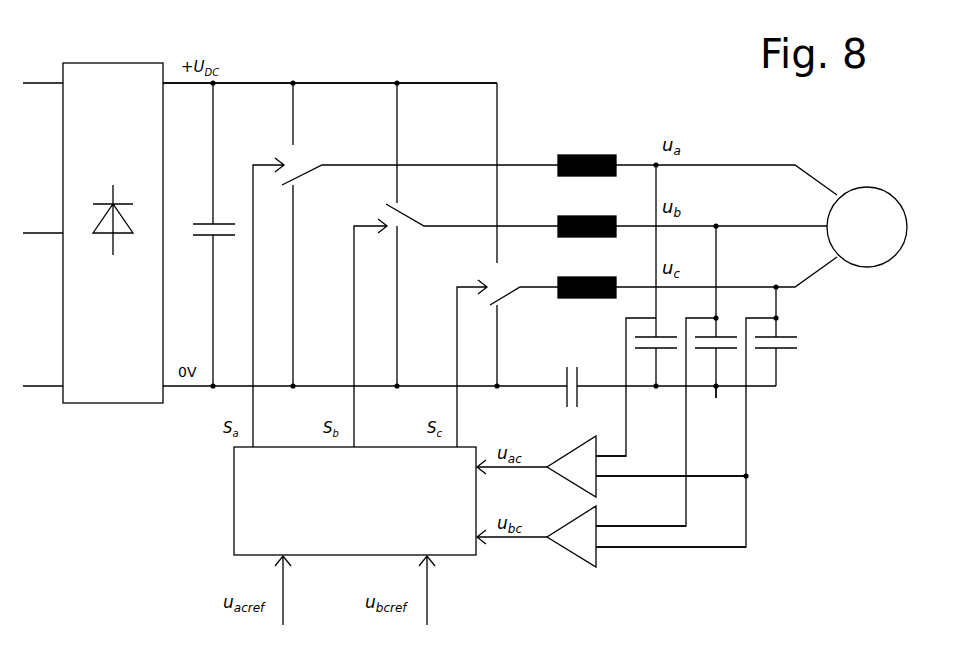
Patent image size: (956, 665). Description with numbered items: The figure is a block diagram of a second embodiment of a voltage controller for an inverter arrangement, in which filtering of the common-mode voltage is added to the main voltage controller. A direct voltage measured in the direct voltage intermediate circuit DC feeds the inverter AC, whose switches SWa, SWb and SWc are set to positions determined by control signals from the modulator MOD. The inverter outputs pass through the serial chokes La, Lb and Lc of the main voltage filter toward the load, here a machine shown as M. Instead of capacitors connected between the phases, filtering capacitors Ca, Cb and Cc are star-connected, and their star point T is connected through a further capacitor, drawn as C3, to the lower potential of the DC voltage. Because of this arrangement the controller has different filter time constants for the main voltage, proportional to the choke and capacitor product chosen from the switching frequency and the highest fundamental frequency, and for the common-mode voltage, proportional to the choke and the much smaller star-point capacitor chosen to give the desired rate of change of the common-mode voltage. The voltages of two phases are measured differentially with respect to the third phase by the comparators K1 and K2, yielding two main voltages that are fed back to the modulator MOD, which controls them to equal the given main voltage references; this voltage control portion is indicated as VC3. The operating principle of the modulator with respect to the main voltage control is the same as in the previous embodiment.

The direct voltage intermediate circuit DC is at (263, 73).
The inverter AC is at (435, 73).
The switch SWa is at (305, 167).
The switch SWb is at (412, 208).
The switch SWc is at (512, 302).
The serial choke La is at (570, 153).
The serial choke Lb is at (570, 214).
The serial choke Lc is at (570, 275).
The modulator M is at (867, 227).
The filtering capacitor Ca is at (663, 335).
The filtering capacitor Cb is at (723, 335).
The filtering capacitor Cc is at (783, 335).
The third capacitor C3 is at (580, 382).
The star point T is at (715, 395).
The comparator K1 is at (573, 447).
The comparator K2 is at (573, 517).
The voltage control circuit VC3 is at (649, 577).
The modulator MOD is at (230, 498).